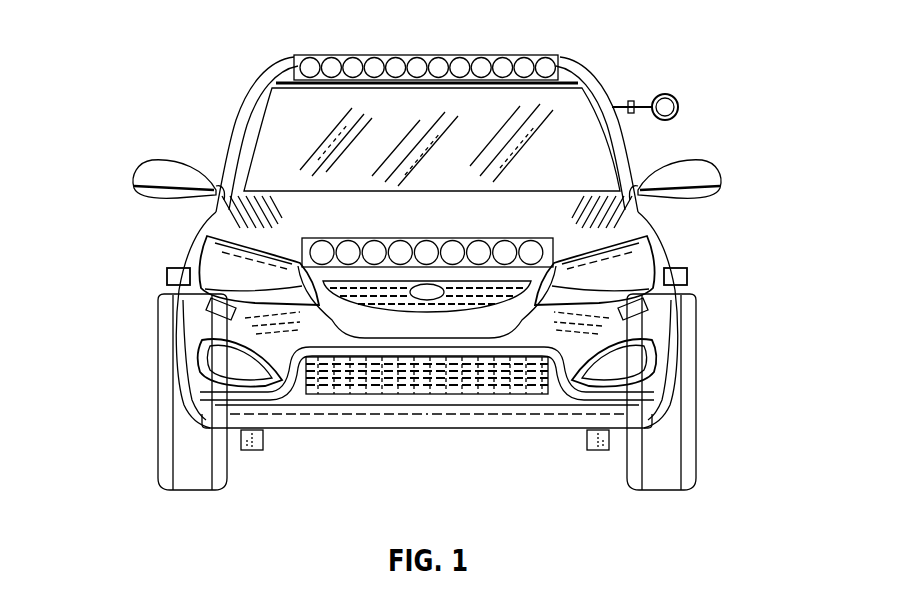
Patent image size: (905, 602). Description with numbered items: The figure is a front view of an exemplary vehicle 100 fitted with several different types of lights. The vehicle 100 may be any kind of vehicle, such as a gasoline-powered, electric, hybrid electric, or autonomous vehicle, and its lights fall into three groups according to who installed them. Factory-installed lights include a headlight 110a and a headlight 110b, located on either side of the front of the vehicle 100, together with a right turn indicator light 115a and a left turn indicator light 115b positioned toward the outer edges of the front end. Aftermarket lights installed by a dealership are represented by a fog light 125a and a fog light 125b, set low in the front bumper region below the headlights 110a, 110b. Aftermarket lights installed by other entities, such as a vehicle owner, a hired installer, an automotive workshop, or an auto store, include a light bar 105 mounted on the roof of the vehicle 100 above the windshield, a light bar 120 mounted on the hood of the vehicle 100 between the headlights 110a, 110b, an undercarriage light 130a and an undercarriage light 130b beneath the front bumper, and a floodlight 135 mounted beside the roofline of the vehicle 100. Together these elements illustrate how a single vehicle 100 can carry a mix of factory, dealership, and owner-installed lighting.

The vehicle 100 is at (132, 38).
The light bar 105 is at (430, 53).
The headlight 110a is at (224, 272).
The headlight 110b is at (642, 265).
The right turn indicator light 115a is at (167, 278).
The left turn indicator light 115b is at (688, 278).
The light bar 120 is at (392, 237).
The fog light 125a is at (232, 372).
The fog light 125b is at (648, 368).
The undercarriage light 130a is at (253, 452).
The undercarriage light 130b is at (598, 452).
The floodlight 135 is at (678, 99).